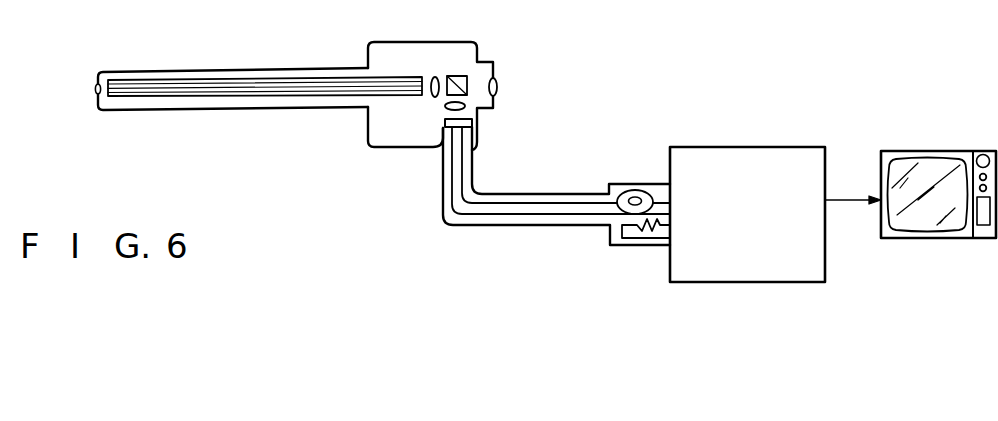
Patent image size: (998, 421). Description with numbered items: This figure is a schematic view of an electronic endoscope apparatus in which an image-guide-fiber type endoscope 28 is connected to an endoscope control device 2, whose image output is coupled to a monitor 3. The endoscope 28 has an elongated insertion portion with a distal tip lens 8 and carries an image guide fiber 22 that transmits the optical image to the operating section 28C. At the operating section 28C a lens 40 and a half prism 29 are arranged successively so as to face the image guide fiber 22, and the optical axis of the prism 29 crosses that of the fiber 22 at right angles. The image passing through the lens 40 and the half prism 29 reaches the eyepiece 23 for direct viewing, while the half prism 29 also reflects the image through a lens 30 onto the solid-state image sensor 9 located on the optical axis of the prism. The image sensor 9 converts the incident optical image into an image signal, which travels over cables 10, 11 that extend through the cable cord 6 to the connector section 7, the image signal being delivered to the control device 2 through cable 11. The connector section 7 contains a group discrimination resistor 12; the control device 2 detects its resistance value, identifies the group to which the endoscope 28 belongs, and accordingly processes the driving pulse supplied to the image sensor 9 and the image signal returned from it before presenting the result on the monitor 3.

The endoscope 28 is at (258, 58).
The image guide fiber 22 is at (185, 97).
The objective lens 8 is at (97, 94).
The operating section 28C is at (478, 43).
The lens 40 is at (435, 77).
The half prism 29 is at (452, 78).
The eyepiece 23 is at (497, 87).
The lens 30 is at (465, 108).
The solid-state image sensor 9 is at (438, 147).
The cable 10 is at (492, 226).
The cable 11 is at (545, 215).
The cable cord 6 is at (556, 197).
The connector section 7 is at (638, 184).
The group discrimination resistor 12 is at (642, 239).
The endoscope control device 2 is at (738, 147).
The monitor 3 is at (926, 152).